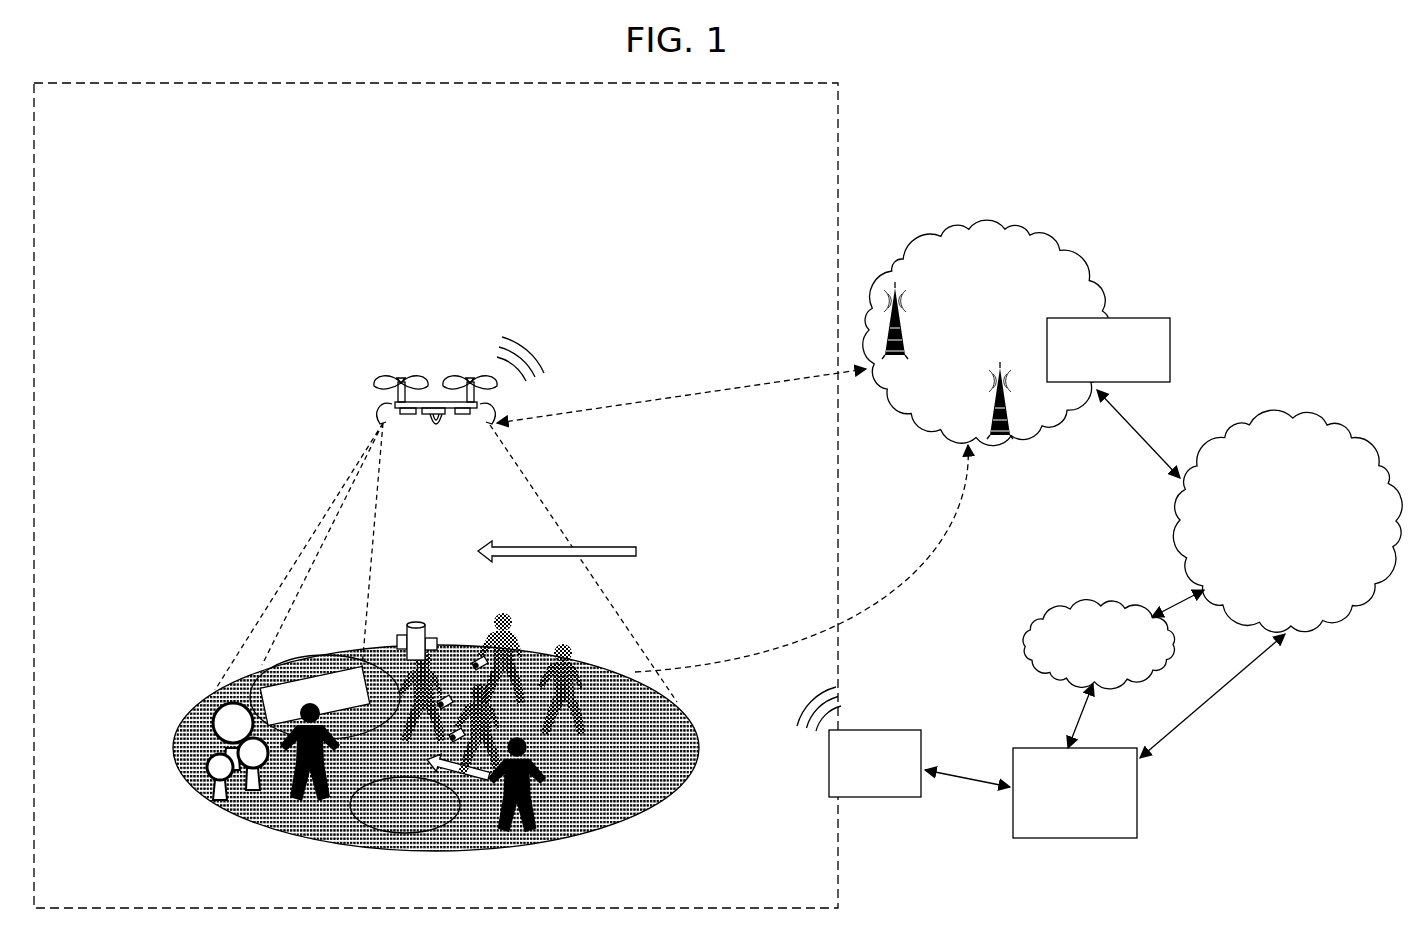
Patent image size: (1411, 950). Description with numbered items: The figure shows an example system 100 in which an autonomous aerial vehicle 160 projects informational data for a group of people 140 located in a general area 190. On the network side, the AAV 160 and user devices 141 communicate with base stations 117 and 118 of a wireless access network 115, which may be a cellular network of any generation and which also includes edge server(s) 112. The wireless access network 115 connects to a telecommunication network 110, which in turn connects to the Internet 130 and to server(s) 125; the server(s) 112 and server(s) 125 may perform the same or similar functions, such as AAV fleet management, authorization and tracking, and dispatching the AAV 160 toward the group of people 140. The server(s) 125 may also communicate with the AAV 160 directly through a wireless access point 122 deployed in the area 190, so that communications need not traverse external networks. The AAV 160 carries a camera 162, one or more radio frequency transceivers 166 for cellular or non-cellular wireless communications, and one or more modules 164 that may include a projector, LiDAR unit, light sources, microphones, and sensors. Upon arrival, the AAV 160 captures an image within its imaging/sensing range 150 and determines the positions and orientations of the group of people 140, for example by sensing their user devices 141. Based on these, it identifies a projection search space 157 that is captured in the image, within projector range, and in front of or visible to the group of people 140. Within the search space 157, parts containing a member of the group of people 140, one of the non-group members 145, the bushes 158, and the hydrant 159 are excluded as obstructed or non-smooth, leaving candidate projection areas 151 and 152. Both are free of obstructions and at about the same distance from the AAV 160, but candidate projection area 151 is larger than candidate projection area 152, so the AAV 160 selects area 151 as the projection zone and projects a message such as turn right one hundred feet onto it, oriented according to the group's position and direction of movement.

The system 100 is at (176, 63).
The general area 190 is at (124, 133).
The projection search space 157 is at (462, 830).
The candidate projection area 151 is at (310, 660).
The candidate projection area 152 is at (350, 815).
The bushes 158 is at (200, 793).
The imaging/sensing range 150 is at (178, 715).
The group of people 140 is at (515, 645).
The user devices 141 is at (485, 660).
The hydrant 159 is at (430, 622).
The non-group members 145 is at (540, 820).
The autonomous aerial vehicle 160 is at (428, 420).
The modules 164 is at (410, 414).
The radio frequency transceivers 166 is at (470, 414).
The camera 162 is at (440, 432).
The wireless access network 115 is at (1008, 321).
The base station 117 is at (895, 358).
The base station 118 is at (1000, 438).
The server(s) 112 is at (1127, 378).
The telecommunication network 110 is at (1307, 512).
The Internet 130 is at (1117, 665).
The wireless access point 122 is at (892, 775).
The server(s) 125 is at (1092, 807).